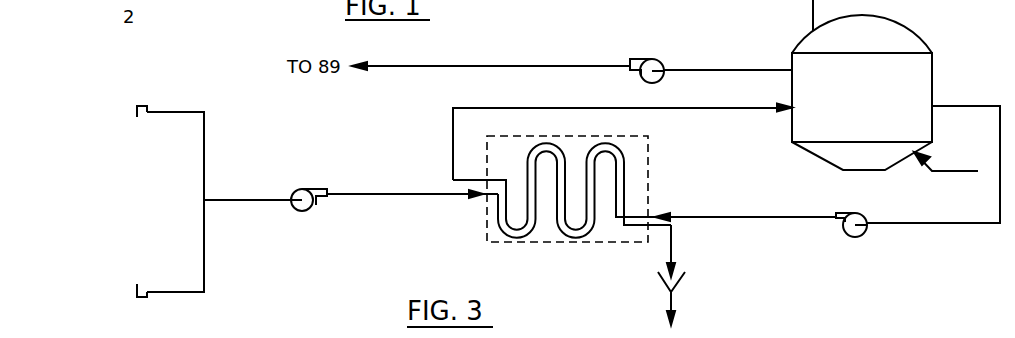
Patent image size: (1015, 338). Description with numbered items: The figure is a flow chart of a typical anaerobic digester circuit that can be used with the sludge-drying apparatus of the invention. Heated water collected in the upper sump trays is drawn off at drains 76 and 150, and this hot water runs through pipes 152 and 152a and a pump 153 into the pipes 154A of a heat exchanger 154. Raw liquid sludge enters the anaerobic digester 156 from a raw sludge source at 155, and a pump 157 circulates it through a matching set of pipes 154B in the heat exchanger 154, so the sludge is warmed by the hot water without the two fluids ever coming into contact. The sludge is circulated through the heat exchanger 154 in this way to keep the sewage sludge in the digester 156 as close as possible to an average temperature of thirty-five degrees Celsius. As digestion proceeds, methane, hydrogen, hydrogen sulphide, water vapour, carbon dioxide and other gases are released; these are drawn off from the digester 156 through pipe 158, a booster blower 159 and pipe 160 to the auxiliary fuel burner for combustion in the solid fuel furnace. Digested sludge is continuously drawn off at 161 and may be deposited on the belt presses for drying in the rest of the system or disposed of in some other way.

The drain 76 is at (139, 118).
The drain 150 is at (142, 284).
The pipe 152 is at (206, 166).
The pipe 152a is at (206, 254).
The pump 153 is at (306, 211).
The heat exchanger 154 is at (545, 236).
The pipes 154A is at (628, 227).
The pipes 154B is at (625, 175).
The raw sludge source 155 is at (960, 172).
The anaerobic digester 156 is at (933, 76).
The pump 157 is at (864, 236).
The pipe 158 is at (700, 69).
The booster blower 159 is at (652, 58).
The pipe 160 is at (575, 63).
The digested sludge draw-off 161 is at (813, 9).